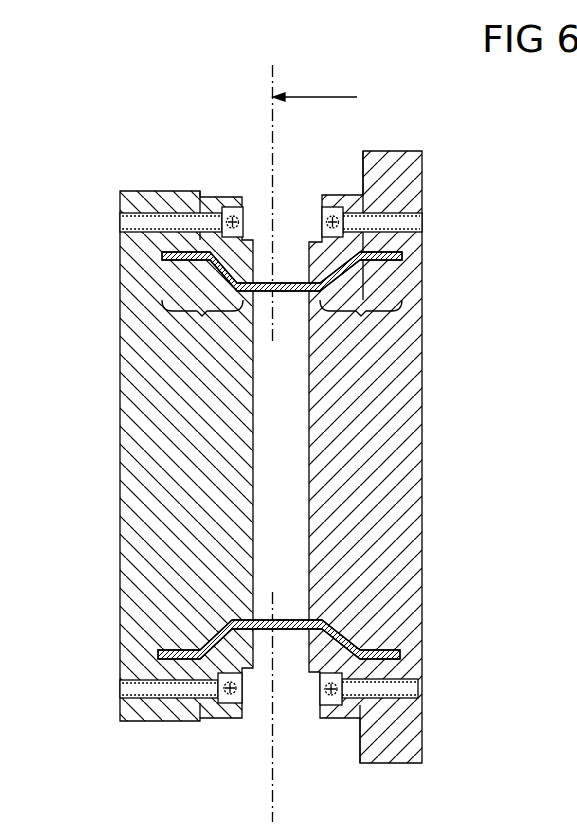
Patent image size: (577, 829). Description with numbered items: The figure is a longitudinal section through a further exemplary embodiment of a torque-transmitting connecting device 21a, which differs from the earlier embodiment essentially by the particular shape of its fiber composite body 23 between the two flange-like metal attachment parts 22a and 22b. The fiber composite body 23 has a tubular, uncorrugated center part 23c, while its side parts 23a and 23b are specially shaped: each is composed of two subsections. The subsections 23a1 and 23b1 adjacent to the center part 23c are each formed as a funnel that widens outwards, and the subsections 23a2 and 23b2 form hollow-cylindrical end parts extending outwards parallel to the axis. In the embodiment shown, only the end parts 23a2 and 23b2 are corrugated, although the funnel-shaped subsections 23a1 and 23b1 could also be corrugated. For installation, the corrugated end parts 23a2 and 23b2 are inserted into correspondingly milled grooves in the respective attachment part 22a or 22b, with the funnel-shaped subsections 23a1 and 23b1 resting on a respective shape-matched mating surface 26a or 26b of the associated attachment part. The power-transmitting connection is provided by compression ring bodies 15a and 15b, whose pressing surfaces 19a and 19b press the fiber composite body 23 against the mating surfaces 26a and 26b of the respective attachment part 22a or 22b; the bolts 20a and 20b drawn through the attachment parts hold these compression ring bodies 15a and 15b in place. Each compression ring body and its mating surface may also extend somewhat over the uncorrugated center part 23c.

The connecting device 21a is at (168, 826).
The attachment part 22b is at (160, 192).
The attachment part 22a is at (393, 158).
The left bolt 20b is at (138, 221).
The right bolt 20a is at (407, 222).
The pressing surface 19b is at (244, 670).
The pressing surface 19a is at (308, 656).
The compression ring body 15b is at (210, 712).
The compression ring body 15a is at (340, 720).
The fiber composite body 23 is at (279, 411).
The side part 23b is at (202, 302).
The side part 23a is at (361, 302).
The funnel-shaped subsection 23b1 is at (212, 266).
The funnel-shaped subsection 23a1 is at (350, 264).
The center part 23c is at (283, 281).
The end part 23b2 is at (203, 646).
The end part 23a2 is at (375, 648).
The mating surface 26b is at (228, 614).
The mating surface 26a is at (345, 612).